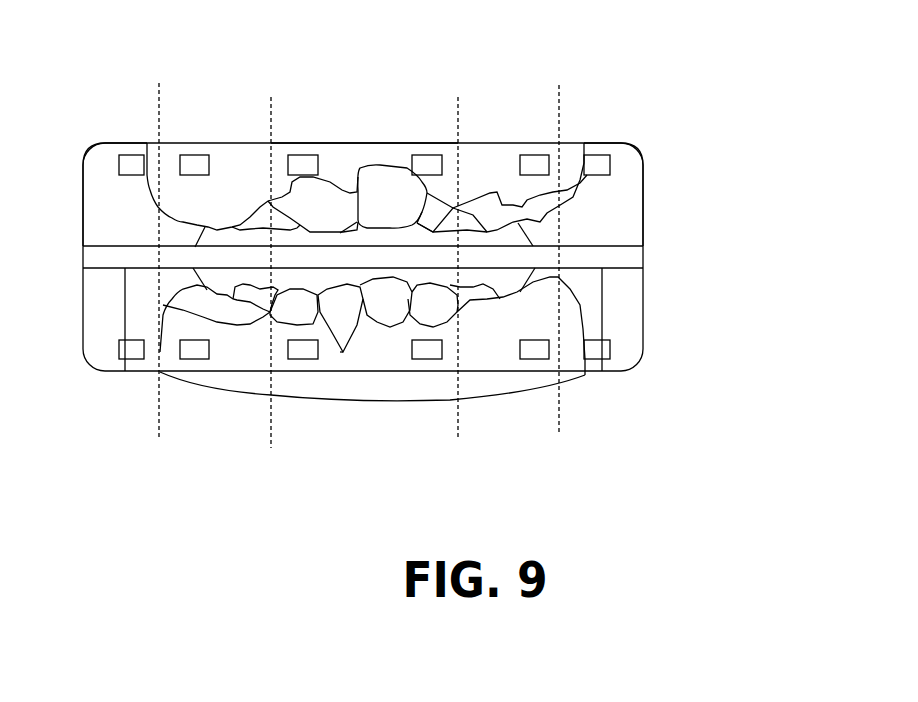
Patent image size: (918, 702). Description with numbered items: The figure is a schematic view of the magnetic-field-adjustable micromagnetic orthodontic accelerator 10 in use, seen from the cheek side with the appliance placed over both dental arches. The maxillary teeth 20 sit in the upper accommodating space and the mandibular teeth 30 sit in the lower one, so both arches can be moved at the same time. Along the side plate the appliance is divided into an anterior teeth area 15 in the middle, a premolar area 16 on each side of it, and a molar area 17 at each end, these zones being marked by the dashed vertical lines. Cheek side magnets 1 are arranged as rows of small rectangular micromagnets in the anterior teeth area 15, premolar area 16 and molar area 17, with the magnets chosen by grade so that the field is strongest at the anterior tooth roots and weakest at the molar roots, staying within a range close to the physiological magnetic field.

The cheek side magnet 1 is at (598, 168).
The magnetic-field-adjustable micromagnetic orthodontic accelerator 10 is at (633, 238).
The anterior teeth area 15 is at (333, 117).
The premolar area 16 is at (228, 130).
The molar area 17 is at (117, 117).
The maxillary teeth 20 is at (367, 178).
The mandibular teeth 30 is at (383, 386).